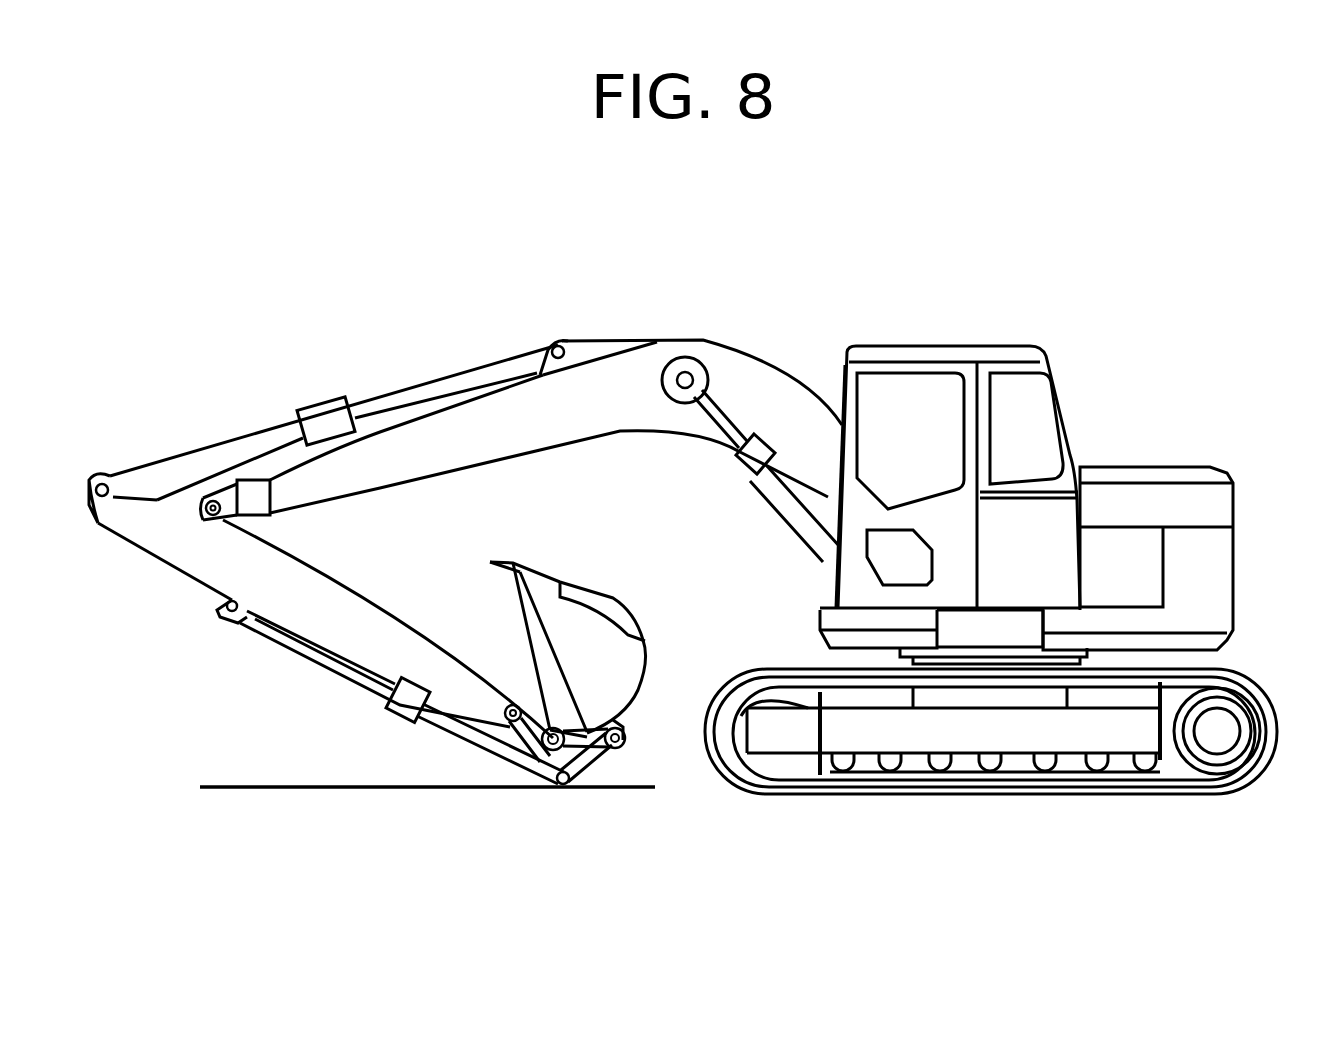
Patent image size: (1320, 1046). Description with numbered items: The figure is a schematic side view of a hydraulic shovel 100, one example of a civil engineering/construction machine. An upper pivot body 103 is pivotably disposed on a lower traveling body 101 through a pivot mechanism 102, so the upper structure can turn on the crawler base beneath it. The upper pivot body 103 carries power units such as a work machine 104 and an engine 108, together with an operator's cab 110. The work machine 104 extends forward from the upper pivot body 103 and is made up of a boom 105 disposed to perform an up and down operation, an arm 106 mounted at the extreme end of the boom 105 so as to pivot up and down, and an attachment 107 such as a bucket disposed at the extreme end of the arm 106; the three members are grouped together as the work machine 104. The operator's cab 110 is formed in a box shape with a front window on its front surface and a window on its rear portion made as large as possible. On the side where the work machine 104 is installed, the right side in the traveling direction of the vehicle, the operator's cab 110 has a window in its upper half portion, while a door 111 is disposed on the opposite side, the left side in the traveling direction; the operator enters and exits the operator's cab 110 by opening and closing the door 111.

The hydraulic shovel 100 is at (819, 330).
The lower traveling body 101 is at (1043, 783).
The pivot mechanism 102 is at (943, 665).
The upper pivot body 103 is at (1193, 647).
The work machine 104 is at (487, 269).
The boom 105 is at (356, 396).
The arm 106 is at (357, 603).
The attachment 107 is at (535, 582).
The engine 108 is at (1187, 523).
The operator's cab 110 is at (1049, 364).
The door 111 is at (850, 523).